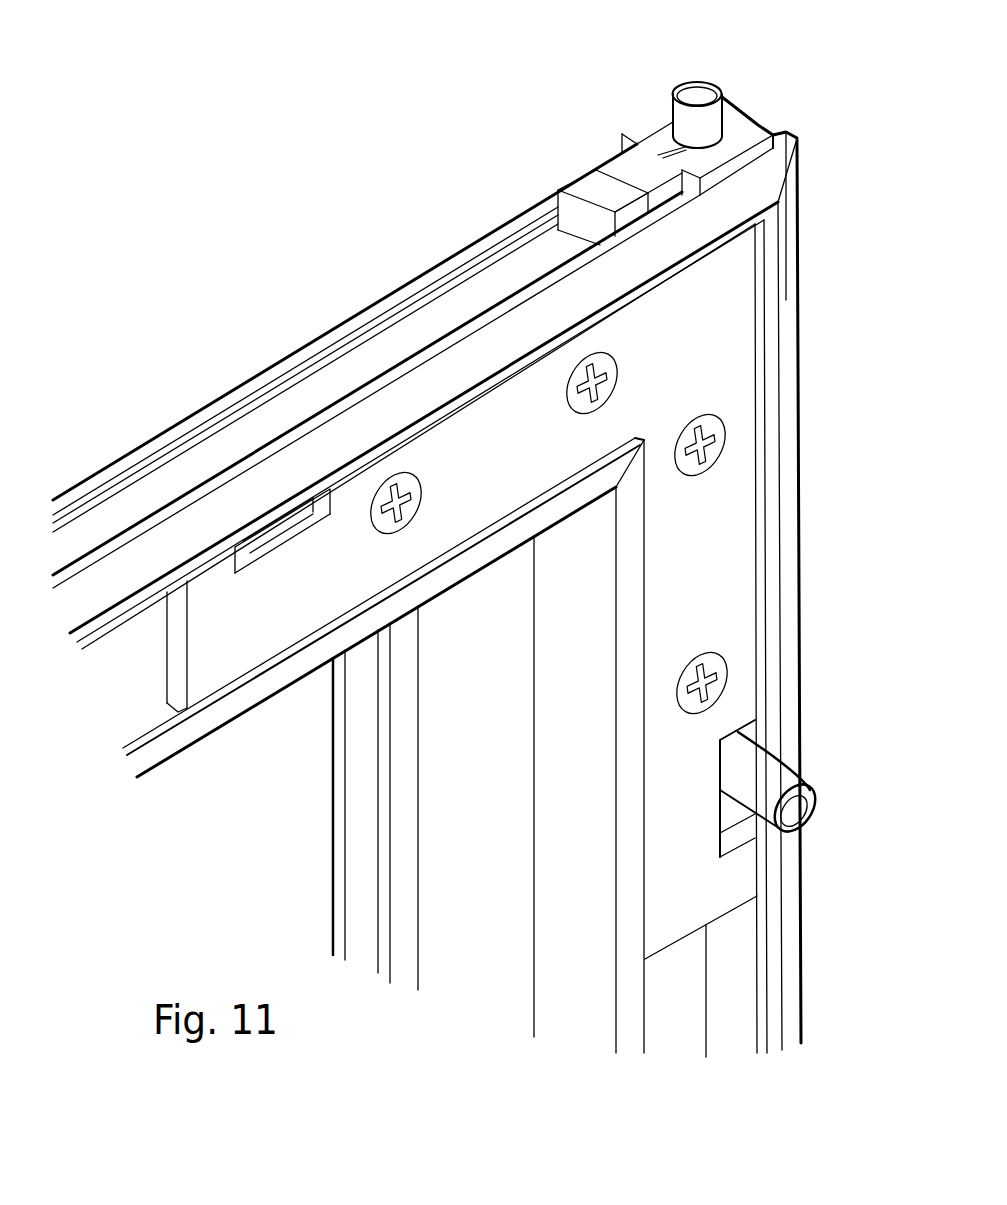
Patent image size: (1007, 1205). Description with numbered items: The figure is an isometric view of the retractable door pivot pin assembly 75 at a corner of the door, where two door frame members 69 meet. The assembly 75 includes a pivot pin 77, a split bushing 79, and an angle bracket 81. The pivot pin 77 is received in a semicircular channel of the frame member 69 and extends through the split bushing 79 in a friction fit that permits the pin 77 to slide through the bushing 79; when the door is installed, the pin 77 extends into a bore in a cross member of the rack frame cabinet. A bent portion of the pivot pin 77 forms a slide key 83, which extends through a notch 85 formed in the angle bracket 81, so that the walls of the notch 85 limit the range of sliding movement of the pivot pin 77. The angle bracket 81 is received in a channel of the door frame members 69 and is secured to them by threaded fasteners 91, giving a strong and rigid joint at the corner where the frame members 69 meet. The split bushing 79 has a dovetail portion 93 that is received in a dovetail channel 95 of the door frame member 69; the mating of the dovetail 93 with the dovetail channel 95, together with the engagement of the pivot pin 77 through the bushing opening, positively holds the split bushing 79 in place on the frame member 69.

The door frame member 69 is at (293, 362).
The retractable door pivot pin assembly 75 is at (765, 110).
The pivot pin 77 is at (699, 102).
The split bushing 79 is at (634, 114).
The angle bracket 81 is at (690, 584).
The slide key 83 is at (800, 813).
The notch 85 is at (742, 737).
The threaded fasteners 91 is at (601, 392).
The dovetail portion 93 is at (575, 205).
The dovetail channel 95 is at (487, 292).